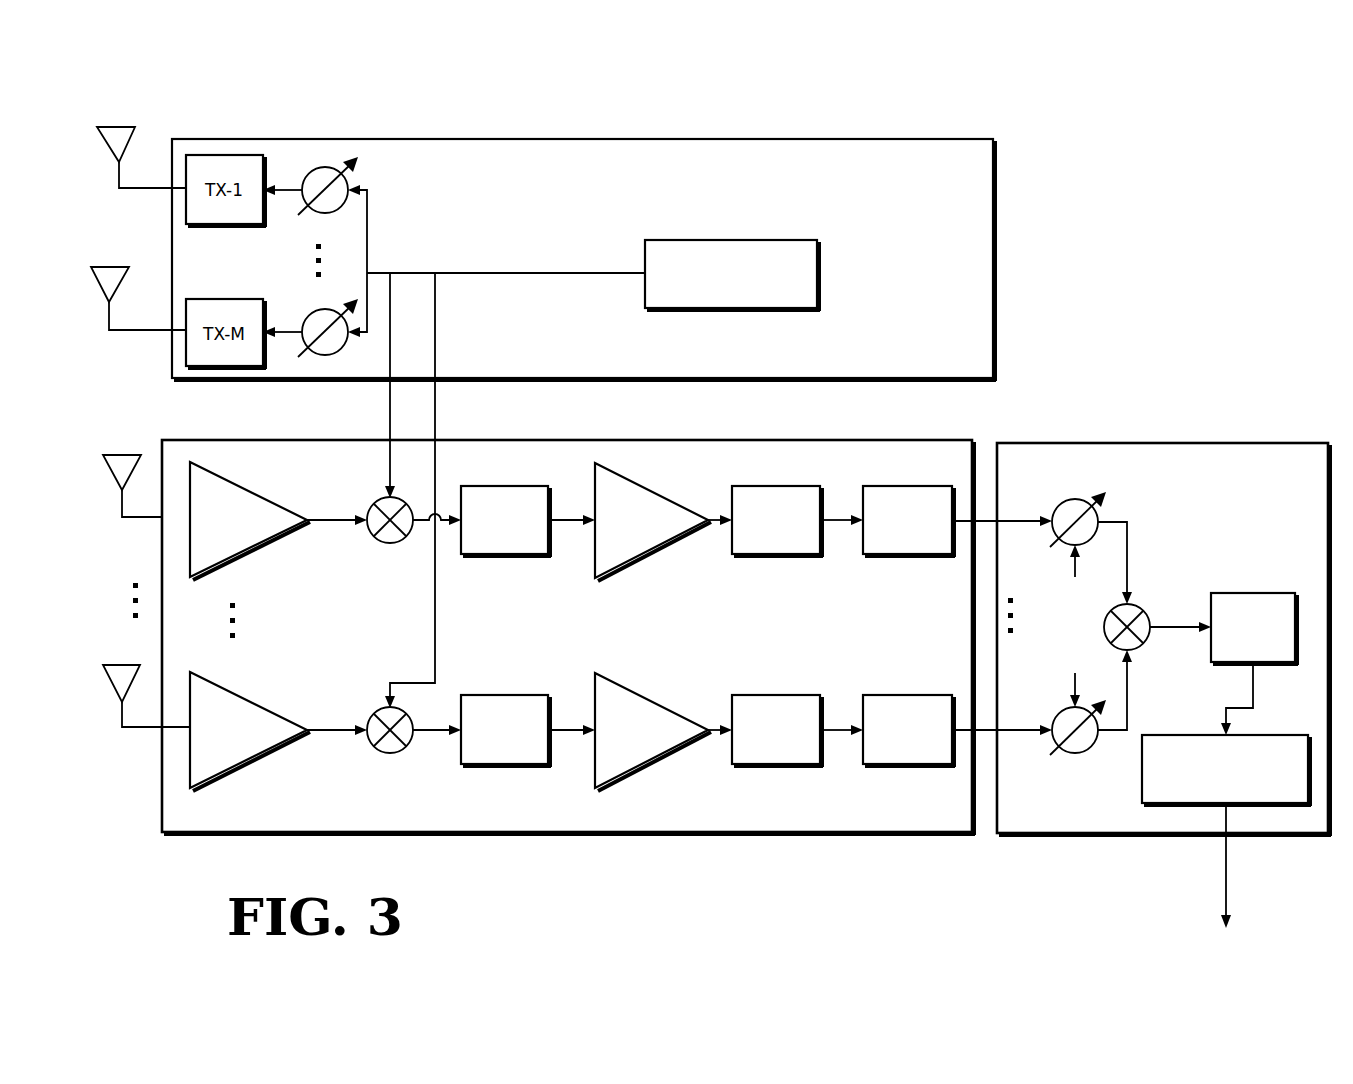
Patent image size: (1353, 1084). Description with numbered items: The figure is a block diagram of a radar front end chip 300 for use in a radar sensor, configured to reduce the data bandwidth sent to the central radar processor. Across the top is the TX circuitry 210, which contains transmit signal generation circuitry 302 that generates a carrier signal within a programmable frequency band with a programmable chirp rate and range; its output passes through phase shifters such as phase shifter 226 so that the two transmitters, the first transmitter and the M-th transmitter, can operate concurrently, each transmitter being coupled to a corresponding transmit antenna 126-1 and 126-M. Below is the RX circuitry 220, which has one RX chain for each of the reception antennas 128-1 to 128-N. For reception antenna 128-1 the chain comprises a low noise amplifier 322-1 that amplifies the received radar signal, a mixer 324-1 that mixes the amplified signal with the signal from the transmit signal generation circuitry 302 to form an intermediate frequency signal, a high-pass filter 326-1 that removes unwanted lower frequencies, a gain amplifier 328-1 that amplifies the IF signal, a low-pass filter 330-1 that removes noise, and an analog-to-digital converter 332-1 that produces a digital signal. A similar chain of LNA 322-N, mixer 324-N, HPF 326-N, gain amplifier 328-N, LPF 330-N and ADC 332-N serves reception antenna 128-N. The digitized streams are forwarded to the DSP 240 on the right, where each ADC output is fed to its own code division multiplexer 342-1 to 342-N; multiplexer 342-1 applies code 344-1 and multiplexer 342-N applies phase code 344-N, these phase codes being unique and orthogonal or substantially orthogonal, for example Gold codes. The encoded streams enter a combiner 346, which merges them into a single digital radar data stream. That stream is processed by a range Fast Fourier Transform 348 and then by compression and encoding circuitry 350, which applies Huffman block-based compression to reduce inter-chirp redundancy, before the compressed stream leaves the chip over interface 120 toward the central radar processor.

The interface 120 is at (1226, 865).
The transmit antenna 126-1 is at (123, 128).
The transmit antenna 126-M is at (101, 267).
The reception antenna 128-1 is at (128, 455).
The reception antenna 128-N is at (117, 698).
The TX circuitry 210 is at (993, 292).
The RX circuitry 220 is at (637, 832).
The phase shifter 226 is at (358, 160).
The DSP 240 is at (1198, 443).
The radar front end chip 300 is at (1178, 104).
The transmit signal generation circuitry 302 is at (817, 240).
The low noise amplifier 322-1 is at (258, 552).
The LNA 322-N is at (258, 762).
The mixer 324-1 is at (385, 543).
The mixer 324-N is at (388, 753).
The high-pass filter 326-1 is at (505, 554).
The HPF 326-N is at (498, 764).
The gain amplifier 328-1 is at (655, 555).
The gain amplifier 328-N is at (648, 768).
The low-pass filter 330-1 is at (793, 554).
The LPF 330-N is at (785, 764).
The analog-to-digital converter 332-1 is at (890, 554).
The ADC 332-N is at (888, 764).
The code division multiplexer 342-1 is at (1060, 508).
The code division multiplexer 342-N is at (1068, 752).
The code 344-1 is at (1077, 573).
The phase code 344-N is at (1069, 679).
The combiner 346 is at (1140, 645).
The range Fast Fourier Transform 348 is at (1255, 593).
The compression and encoding circuitry 350 is at (1253, 738).